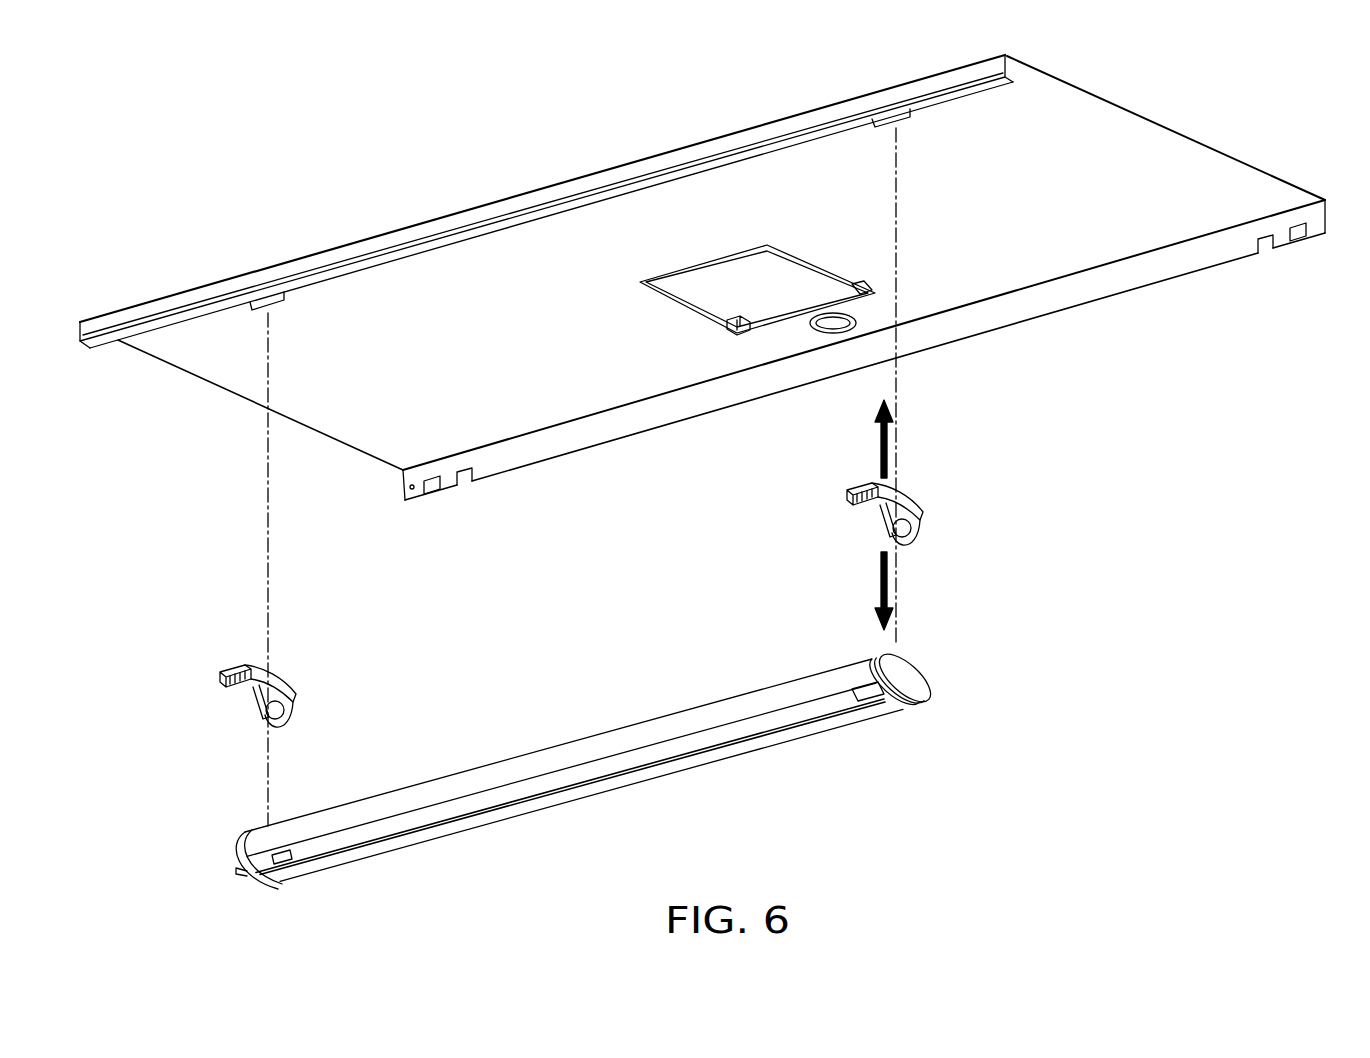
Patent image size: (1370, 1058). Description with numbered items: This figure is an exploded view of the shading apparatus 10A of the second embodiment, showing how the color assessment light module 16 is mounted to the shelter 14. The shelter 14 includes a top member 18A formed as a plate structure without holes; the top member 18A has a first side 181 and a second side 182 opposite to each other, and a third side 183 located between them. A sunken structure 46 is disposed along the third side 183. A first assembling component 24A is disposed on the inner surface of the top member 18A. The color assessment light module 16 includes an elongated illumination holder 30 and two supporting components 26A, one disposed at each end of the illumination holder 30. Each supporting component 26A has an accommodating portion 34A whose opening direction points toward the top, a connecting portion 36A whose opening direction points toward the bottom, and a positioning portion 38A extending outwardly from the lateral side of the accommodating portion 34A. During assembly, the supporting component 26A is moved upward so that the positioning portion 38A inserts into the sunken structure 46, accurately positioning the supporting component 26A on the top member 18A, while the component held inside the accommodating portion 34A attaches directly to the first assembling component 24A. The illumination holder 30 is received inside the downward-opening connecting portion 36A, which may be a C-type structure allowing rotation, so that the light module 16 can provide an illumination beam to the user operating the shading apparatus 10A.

The shading apparatus 10A is at (242, 122).
The top member 18A is at (1195, 171).
The shelter 14 is at (716, 277).
The first side 181 is at (1127, 109).
The second side 182 is at (205, 381).
The third side 183 is at (543, 189).
The sunken structure 46 is at (961, 76).
The first assembling component 24A is at (262, 313).
The supporting component 26A is at (923, 508).
The color assessment light module 16 is at (638, 583).
The accommodating portion 34A is at (911, 488).
The connecting portion 36A is at (946, 551).
The positioning portion 38A is at (825, 480).
The illumination holder 30 is at (582, 742).